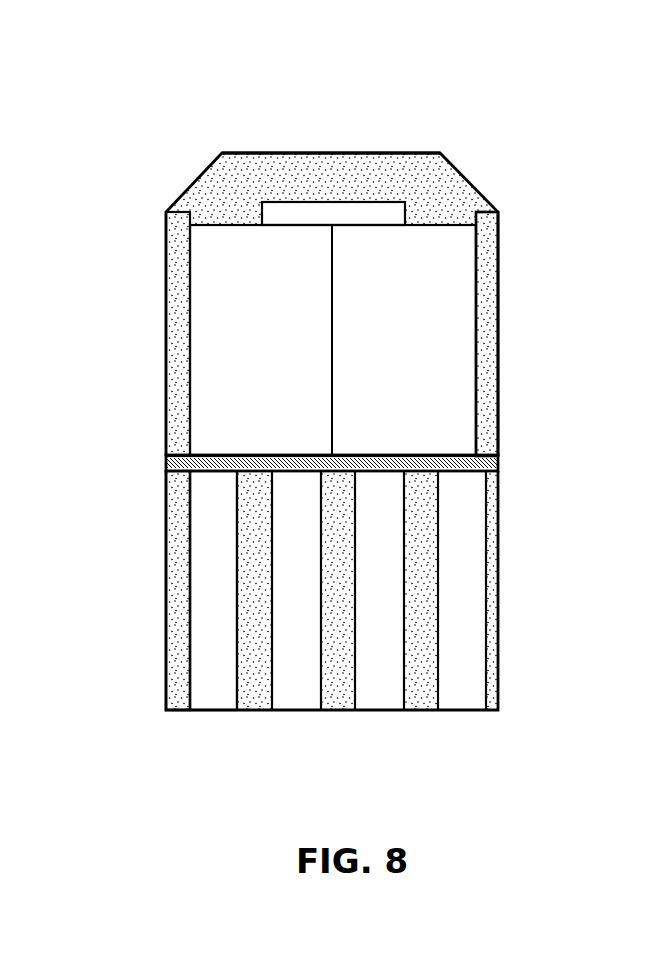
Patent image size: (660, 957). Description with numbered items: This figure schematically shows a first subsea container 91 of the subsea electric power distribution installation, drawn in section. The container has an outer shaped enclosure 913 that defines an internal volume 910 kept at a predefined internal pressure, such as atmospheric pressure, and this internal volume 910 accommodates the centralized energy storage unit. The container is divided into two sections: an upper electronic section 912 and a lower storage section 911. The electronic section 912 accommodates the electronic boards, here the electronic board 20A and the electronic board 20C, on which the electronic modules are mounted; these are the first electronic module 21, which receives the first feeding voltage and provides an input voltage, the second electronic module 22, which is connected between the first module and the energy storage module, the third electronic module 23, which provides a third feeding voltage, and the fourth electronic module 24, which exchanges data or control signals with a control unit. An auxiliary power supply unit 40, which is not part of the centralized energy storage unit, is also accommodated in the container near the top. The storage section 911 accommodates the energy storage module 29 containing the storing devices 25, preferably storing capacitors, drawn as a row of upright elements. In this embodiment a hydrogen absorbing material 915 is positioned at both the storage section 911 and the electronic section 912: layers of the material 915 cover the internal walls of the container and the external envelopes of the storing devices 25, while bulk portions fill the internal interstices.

The first subsea container 91 is at (177, 168).
The internal volume 910 is at (443, 200).
The outer shaped enclosure 913 is at (320, 153).
The auxiliary power supply unit 40 is at (340, 212).
The hydrogen absorbing material 915 is at (175, 270).
The electronic board 20A is at (215, 382).
The electronic board 20C is at (440, 283).
The first electronic module 21 is at (595, 300).
The second electronic module 22 is at (487, 334).
The third electronic module 23 is at (487, 334).
The fourth electronic module 24 is at (487, 334).
The electronic section 912 is at (510, 423).
The storage section 911 is at (510, 603).
The energy storage module 29 is at (148, 617).
The storing devices 25 is at (220, 615).